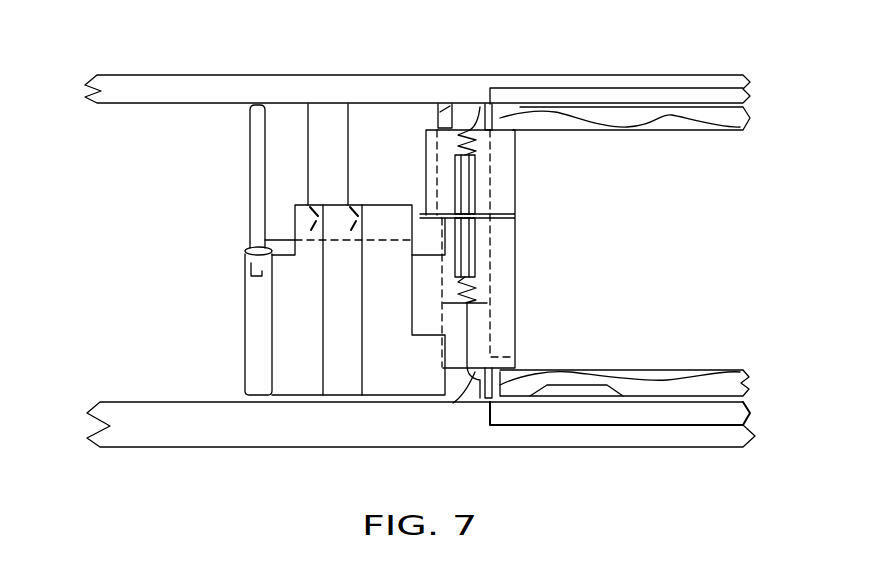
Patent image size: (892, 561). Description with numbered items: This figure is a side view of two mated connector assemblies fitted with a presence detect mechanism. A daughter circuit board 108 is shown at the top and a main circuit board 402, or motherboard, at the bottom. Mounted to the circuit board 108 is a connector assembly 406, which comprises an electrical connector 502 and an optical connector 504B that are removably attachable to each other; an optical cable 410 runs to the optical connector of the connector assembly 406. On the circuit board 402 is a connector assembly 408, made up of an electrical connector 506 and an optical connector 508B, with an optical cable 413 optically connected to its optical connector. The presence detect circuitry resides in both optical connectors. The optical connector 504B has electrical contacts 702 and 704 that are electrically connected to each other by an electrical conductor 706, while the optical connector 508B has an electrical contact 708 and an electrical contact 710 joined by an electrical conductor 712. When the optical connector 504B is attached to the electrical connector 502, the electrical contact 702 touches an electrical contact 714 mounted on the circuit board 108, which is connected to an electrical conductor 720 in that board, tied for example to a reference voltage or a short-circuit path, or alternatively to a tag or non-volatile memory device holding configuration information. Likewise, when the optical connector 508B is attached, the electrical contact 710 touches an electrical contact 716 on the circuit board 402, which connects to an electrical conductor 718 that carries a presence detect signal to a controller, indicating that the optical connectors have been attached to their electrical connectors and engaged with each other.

The circuit board 108 is at (217, 83).
The circuit board 402 is at (127, 401).
The connector assembly 406 is at (187, 108).
The connector assembly 408 is at (217, 205).
The optical cable 410 is at (693, 132).
The optical cable 413 is at (708, 370).
The electrical connector 502 is at (448, 104).
The optical connector 504B is at (515, 160).
The electrical connector 506 is at (455, 405).
The optical connector 508B is at (515, 288).
The electrical contact 702 is at (512, 148).
The electrical contact 704 is at (508, 215).
The electrical conductor 706 is at (508, 182).
The electrical contact 708 is at (507, 240).
The electrical contact 710 is at (515, 352).
The electrical conductor 712 is at (505, 290).
The electrical contact 714 is at (497, 128).
The electrical contact 716 is at (483, 398).
The electrical conductor 718 is at (613, 425).
The electrical conductor 720 is at (615, 88).